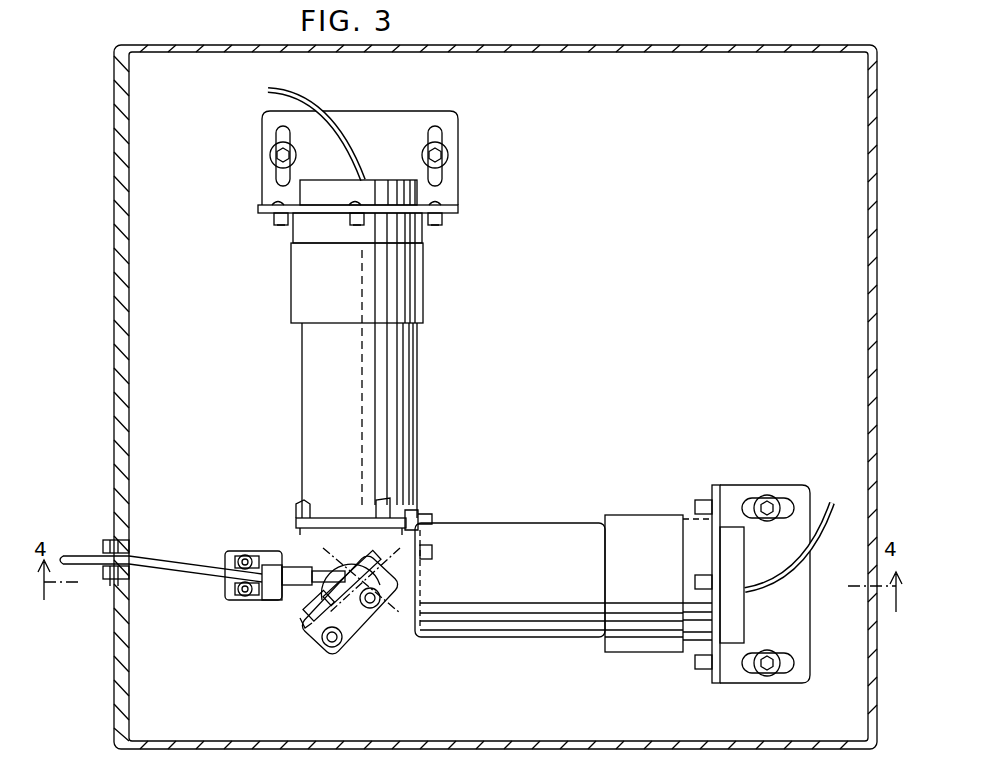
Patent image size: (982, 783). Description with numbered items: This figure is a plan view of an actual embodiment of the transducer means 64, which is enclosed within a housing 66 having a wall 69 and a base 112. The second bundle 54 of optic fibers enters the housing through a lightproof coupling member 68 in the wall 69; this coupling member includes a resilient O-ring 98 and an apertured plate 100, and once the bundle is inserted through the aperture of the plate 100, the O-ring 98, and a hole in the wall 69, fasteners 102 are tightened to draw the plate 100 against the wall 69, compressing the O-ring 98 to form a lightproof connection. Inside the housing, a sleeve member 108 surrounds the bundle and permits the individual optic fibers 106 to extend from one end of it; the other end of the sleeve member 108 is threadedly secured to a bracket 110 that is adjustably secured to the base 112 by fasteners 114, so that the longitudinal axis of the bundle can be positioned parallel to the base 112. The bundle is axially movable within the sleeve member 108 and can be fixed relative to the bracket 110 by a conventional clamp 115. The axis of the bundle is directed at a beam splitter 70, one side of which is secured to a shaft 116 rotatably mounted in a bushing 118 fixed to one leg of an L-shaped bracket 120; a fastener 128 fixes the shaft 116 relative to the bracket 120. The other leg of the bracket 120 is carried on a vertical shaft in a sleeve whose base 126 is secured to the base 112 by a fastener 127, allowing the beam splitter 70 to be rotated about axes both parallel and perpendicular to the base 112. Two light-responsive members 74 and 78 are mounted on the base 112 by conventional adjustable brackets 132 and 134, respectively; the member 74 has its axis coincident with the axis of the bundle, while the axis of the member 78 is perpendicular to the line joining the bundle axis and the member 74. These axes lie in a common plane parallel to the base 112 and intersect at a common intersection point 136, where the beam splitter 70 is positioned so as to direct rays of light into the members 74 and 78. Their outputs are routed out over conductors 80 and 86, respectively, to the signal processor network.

The transducer means 64 is at (104, 296).
The housing 66 is at (632, 744).
The wall 69 is at (129, 158).
The base 112 is at (490, 730).
The conductor 86 is at (318, 104).
The adjustable bracket 134 is at (404, 120).
The light-responsive member 78 is at (410, 362).
The common intersection point 136 is at (354, 505).
The optic fibers 106 is at (346, 562).
The light-responsive member 74 is at (514, 535).
The adjustable bracket 132 is at (808, 650).
The conductor 80 is at (820, 536).
The second bundle of optic fibers 54 is at (85, 556).
The resilient O-ring 98 is at (130, 550).
The lightproof coupling member 68 is at (108, 540).
The fasteners 102 is at (105, 582).
The apertured plate 100 is at (113, 582).
The sleeve member 108 is at (295, 566).
The fasteners 114 is at (245, 600).
The clamp 115 is at (266, 600).
The bracket 110 is at (290, 598).
The L-shaped bracket 120 is at (346, 580).
The beam splitter 70 is at (352, 610).
The bushing 118 is at (356, 634).
The fastener 128 is at (344, 656).
The base 126 is at (320, 646).
The shaft 116 is at (306, 622).
The fastener 127 is at (336, 660).